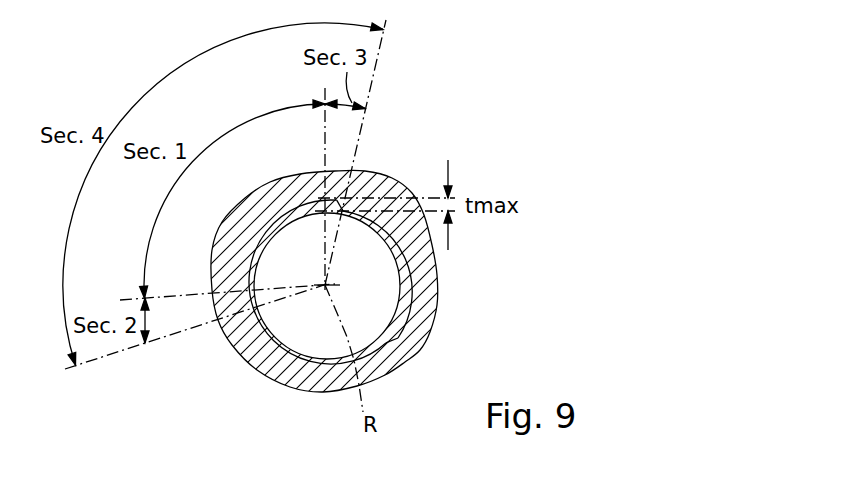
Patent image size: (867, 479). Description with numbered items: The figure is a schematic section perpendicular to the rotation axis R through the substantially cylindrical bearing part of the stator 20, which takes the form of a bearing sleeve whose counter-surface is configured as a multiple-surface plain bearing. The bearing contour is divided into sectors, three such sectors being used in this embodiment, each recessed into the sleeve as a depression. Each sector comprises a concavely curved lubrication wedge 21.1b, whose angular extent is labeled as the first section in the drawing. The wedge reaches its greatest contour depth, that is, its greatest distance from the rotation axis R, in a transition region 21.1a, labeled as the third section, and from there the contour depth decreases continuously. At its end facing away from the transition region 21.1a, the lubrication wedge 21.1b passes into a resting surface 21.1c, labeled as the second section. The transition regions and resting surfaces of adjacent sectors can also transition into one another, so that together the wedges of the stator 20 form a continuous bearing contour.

The stator 20 is at (240, 372).
The transition region 21.1a is at (400, 343).
The lubrication wedge 21.1b is at (412, 289).
The resting surface 21.1c is at (352, 228).